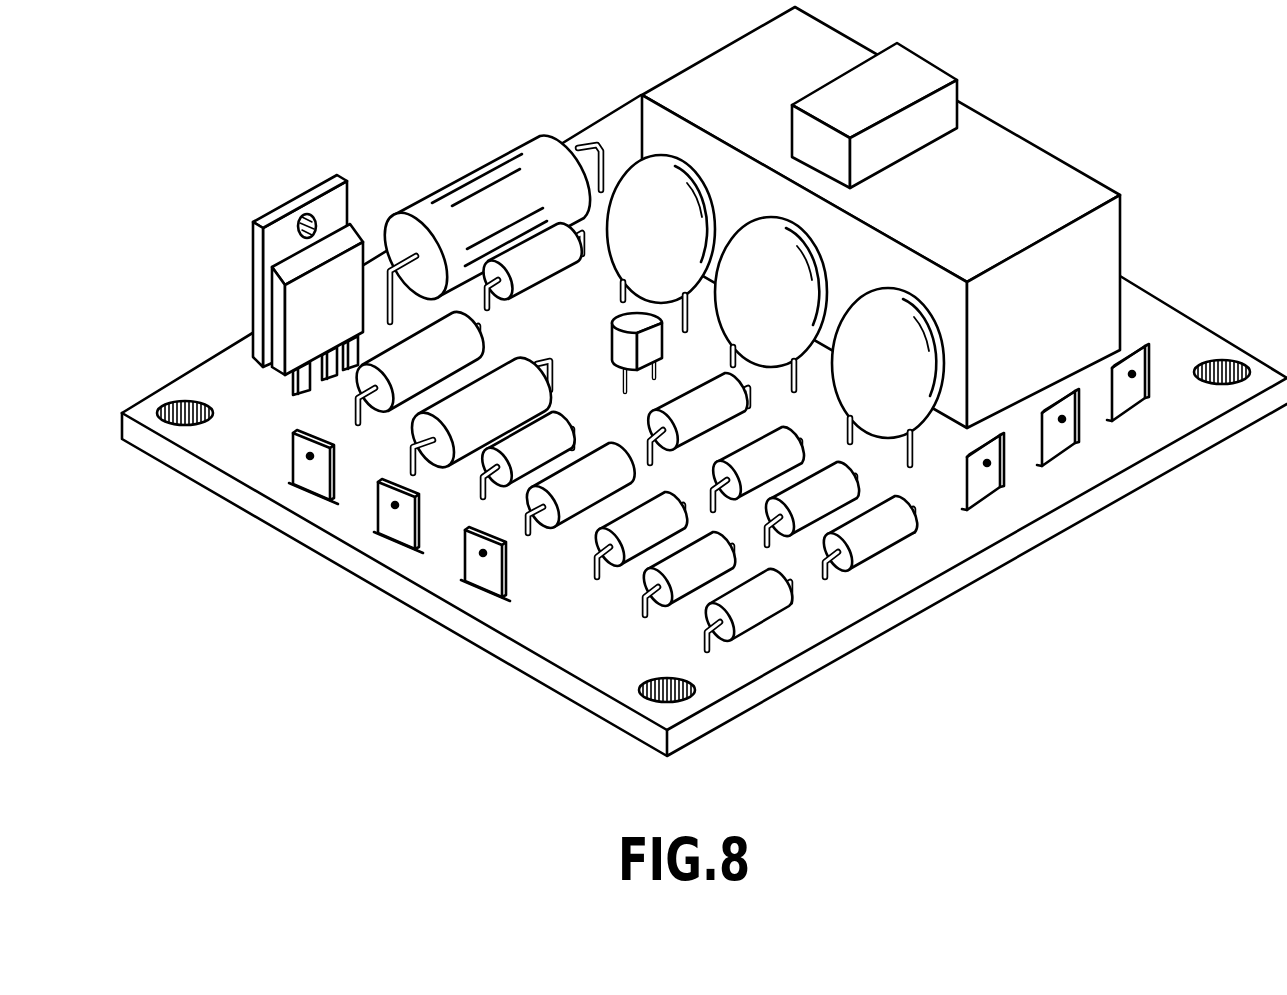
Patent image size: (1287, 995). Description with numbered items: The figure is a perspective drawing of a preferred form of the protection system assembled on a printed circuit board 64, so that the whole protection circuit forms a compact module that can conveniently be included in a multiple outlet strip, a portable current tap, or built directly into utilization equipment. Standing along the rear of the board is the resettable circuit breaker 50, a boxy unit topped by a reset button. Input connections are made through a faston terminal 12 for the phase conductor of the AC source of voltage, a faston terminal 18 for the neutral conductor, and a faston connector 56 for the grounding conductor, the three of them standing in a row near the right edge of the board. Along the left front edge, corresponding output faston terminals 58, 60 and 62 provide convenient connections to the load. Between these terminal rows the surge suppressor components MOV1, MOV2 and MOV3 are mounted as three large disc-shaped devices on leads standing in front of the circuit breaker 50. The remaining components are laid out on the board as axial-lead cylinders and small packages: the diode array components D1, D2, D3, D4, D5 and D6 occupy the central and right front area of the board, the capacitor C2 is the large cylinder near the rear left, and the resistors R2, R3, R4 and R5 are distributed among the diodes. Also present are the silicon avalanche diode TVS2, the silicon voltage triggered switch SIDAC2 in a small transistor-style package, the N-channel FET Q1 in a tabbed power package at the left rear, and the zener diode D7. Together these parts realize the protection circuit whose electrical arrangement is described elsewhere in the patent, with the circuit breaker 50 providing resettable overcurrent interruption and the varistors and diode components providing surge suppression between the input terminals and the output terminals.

The faston terminal 12 is at (1150, 380).
The faston terminal 18 is at (1080, 432).
The resettable circuit breaker 50 is at (1142, 225).
The faston connector 56 is at (1007, 467).
The output faston terminal 58 is at (292, 462).
The output faston terminal 60 is at (377, 507).
The output faston terminal 62 is at (465, 558).
The printed circuit board 64 is at (725, 723).
The N-channel FET Q1 is at (300, 198).
The capacitor C2 is at (483, 168).
The surge suppressor component MOV1 is at (945, 318).
The surge suppressor component MOV2 is at (813, 247).
The surge suppressor component MOV3 is at (632, 162).
The resistor R2 is at (553, 272).
The resistor R3 is at (412, 433).
The resistor R4 is at (663, 402).
The resistor R5 is at (582, 507).
The diode array component D1 is at (617, 575).
The diode array component D2 is at (710, 452).
The diode array component D3 is at (667, 607).
The diode array component D4 is at (767, 495).
The diode array component D5 is at (760, 623).
The diode array component D6 is at (823, 532).
The zener diode D7 is at (477, 467).
The silicon avalanche diode TVS2 is at (353, 383).
The silicon voltage triggered switch SIDAC2 is at (610, 343).